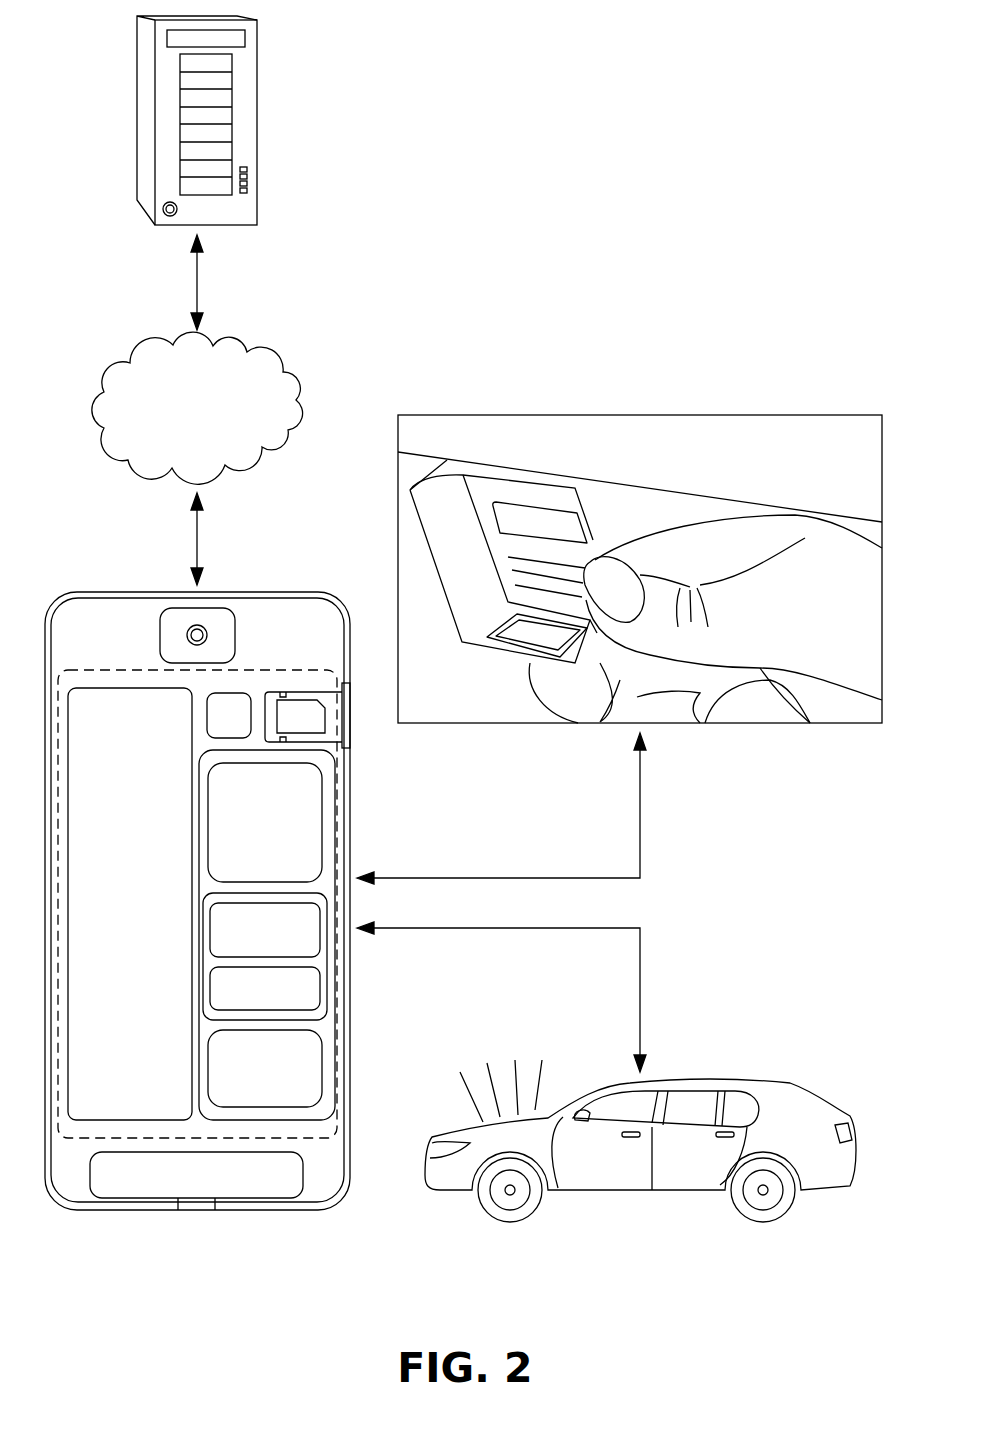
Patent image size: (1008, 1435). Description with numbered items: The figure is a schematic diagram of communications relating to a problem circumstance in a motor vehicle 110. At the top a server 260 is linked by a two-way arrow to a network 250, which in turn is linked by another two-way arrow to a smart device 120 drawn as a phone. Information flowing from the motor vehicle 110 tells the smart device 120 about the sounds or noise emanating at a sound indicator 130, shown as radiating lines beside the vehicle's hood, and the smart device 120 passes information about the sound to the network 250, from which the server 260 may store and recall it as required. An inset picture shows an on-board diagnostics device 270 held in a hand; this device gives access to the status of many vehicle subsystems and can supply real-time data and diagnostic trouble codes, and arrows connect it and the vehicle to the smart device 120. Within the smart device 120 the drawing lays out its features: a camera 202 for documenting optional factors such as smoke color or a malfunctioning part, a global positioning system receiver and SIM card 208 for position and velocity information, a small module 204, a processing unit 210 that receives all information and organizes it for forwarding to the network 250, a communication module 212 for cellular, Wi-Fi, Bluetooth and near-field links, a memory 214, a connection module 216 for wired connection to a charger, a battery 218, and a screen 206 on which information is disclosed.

The server 260 is at (257, 110).
The network 250 is at (297, 392).
The smart device 120 is at (122, 592).
The camera 202 is at (158, 630).
The sensor 204 is at (230, 690).
The screen 206 is at (178, 1138).
The global positioning system receiver 208 is at (305, 690).
The processing unit 210 is at (243, 837).
The communication module 212 is at (243, 945).
The memory 214 is at (243, 999).
The connection module 216 is at (243, 1078).
The battery 218 is at (106, 913).
The on-board diagnostics device 270 is at (517, 637).
The sound indicator 130 is at (490, 1040).
The motor vehicle 110 is at (707, 1080).